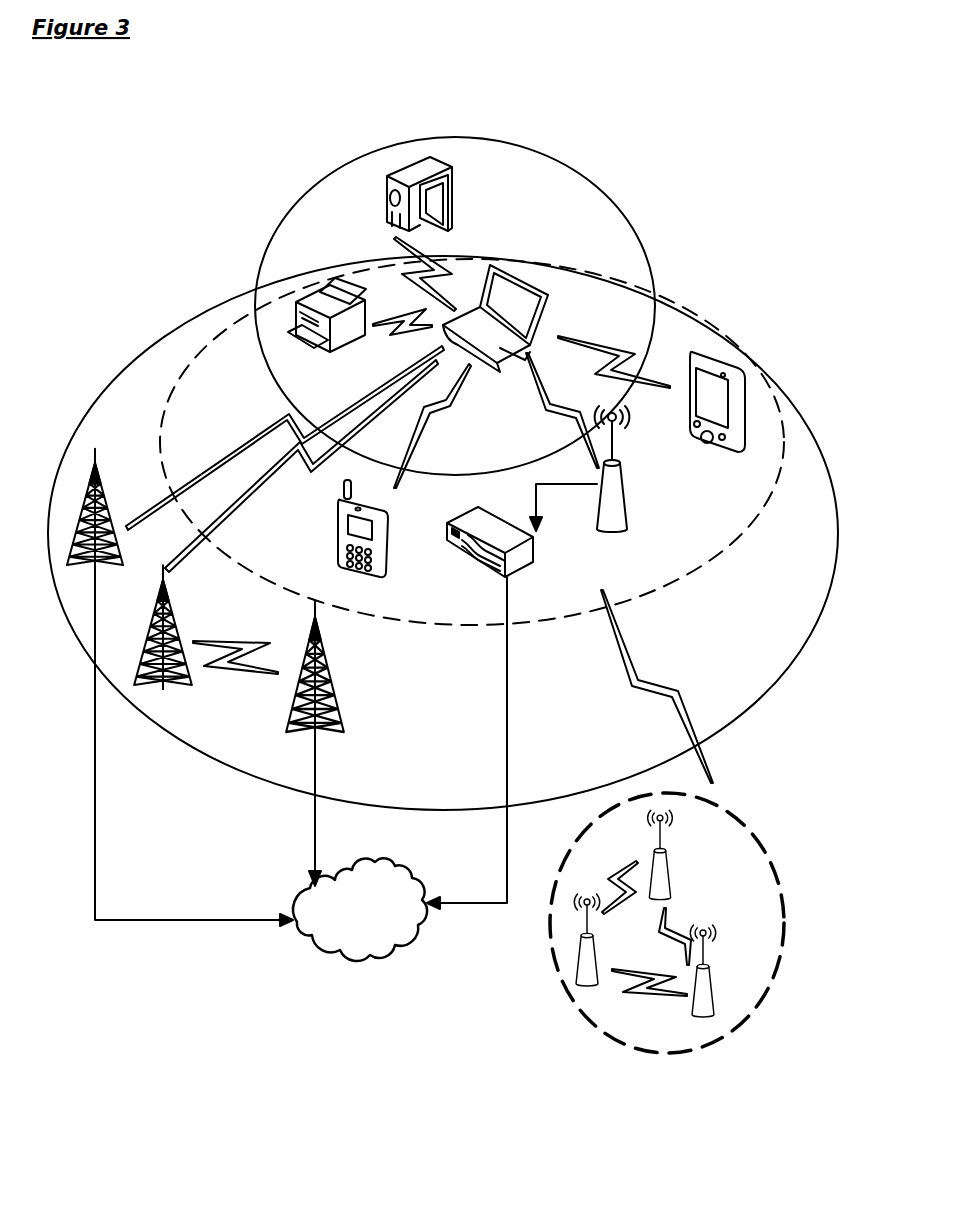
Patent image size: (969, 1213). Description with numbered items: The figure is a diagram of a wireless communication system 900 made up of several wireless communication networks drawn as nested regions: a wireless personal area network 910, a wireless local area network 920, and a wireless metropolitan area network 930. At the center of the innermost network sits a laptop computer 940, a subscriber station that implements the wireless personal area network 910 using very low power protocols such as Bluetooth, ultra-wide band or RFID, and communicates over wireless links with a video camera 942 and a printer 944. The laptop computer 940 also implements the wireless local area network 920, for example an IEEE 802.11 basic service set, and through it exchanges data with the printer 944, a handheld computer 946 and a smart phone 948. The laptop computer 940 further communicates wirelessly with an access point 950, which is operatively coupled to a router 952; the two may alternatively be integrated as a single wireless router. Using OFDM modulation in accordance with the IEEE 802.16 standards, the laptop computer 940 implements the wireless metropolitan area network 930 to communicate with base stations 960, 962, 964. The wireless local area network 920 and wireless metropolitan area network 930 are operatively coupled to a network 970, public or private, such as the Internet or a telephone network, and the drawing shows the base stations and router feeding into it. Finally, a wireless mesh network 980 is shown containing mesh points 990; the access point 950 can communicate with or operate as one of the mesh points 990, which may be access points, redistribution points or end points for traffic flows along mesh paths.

The wireless communication system 900 is at (679, 171).
The wireless personal area network (WPAN) 910 is at (258, 270).
The wireless local area network (WLAN) 920 is at (202, 348).
The wireless metropolitan area network (WMAN) 930 is at (137, 360).
The laptop computer 940 is at (515, 277).
The video camera 942 is at (452, 207).
The printer 944 is at (350, 350).
The handheld computer 946 is at (717, 455).
The smart phone 948 is at (387, 576).
The access point (AP) 950 is at (630, 528).
The router 952 is at (520, 570).
The base station 960 is at (95, 476).
The base station 962 is at (172, 636).
The base station 964 is at (337, 706).
The network 970 is at (412, 878).
The wireless mesh network 980 is at (675, 912).
The mesh points (MPs) 990 is at (701, 908).